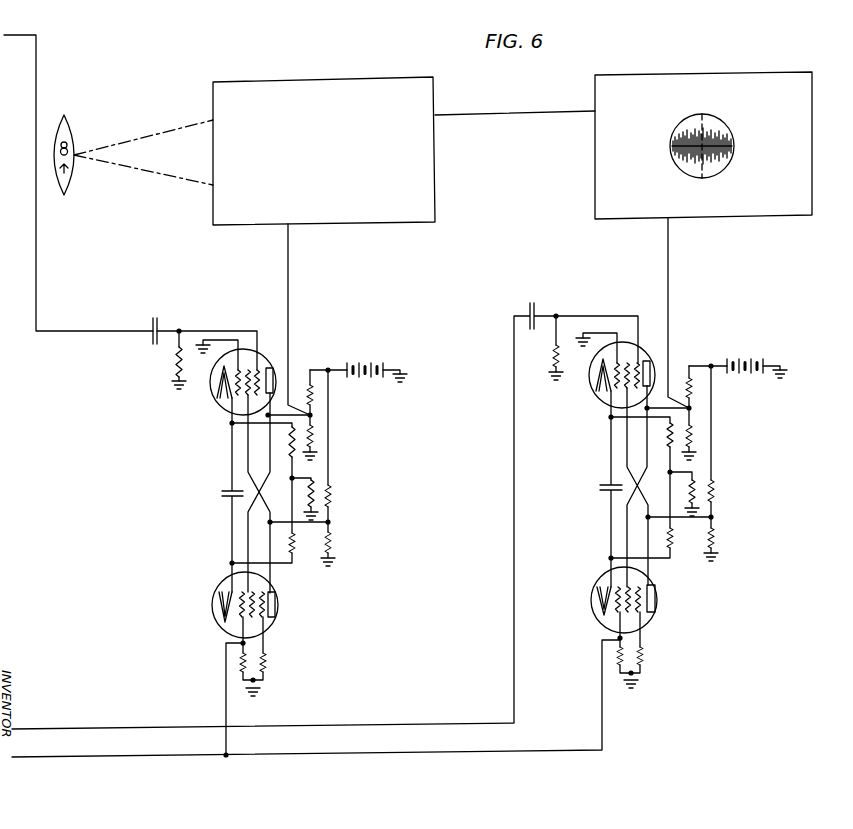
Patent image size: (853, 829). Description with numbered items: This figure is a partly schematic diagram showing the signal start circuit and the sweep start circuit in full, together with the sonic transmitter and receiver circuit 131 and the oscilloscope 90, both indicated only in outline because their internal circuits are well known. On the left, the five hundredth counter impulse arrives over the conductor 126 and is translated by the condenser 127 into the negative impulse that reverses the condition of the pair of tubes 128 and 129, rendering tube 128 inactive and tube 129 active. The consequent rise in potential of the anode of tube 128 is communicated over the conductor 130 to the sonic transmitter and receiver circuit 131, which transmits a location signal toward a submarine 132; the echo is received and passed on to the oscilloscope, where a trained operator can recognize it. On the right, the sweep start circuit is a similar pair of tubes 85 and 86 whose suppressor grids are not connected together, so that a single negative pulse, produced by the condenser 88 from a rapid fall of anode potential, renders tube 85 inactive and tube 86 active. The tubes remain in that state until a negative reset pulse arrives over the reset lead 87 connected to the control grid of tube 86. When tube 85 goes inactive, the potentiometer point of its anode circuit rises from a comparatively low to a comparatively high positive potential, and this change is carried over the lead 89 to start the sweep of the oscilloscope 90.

The conductor 126 is at (37, 268).
The condenser 127 is at (163, 308).
The tube 128 is at (211, 406).
The tube 129 is at (212, 610).
The conductor 130 is at (290, 264).
The sonic transmitter and receiver circuit 131 is at (433, 91).
The submarine 132 is at (70, 136).
The tube 85 is at (645, 350).
The tube 86 is at (652, 617).
The reset lead 87 is at (604, 729).
The condenser 88 is at (539, 296).
The lead 89 is at (670, 266).
The oscilloscope 90 is at (812, 143).